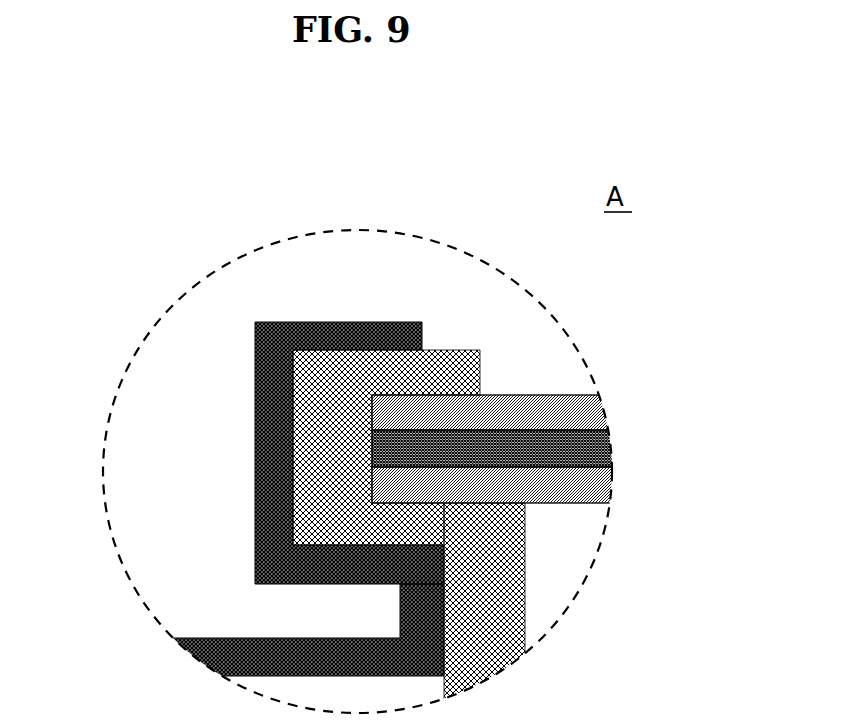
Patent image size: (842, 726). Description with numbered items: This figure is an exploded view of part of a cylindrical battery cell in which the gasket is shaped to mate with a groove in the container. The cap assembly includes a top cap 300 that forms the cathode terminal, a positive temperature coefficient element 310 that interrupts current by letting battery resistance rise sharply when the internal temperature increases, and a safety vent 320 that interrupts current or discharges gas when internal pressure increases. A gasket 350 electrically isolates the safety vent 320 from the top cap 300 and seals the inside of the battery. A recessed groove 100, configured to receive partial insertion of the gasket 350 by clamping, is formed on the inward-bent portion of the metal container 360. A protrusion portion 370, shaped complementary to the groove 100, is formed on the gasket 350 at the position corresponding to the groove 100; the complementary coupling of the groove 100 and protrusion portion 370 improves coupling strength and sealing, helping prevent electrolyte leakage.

The groove 100 is at (400, 322).
The top cap 300 is at (604, 415).
The positive temperature coefficient (PTC) element 310 is at (606, 451).
The safety vent 320 is at (608, 488).
The gasket 350 is at (312, 405).
The metal container 360 is at (257, 487).
The protrusion portion 370 is at (320, 322).